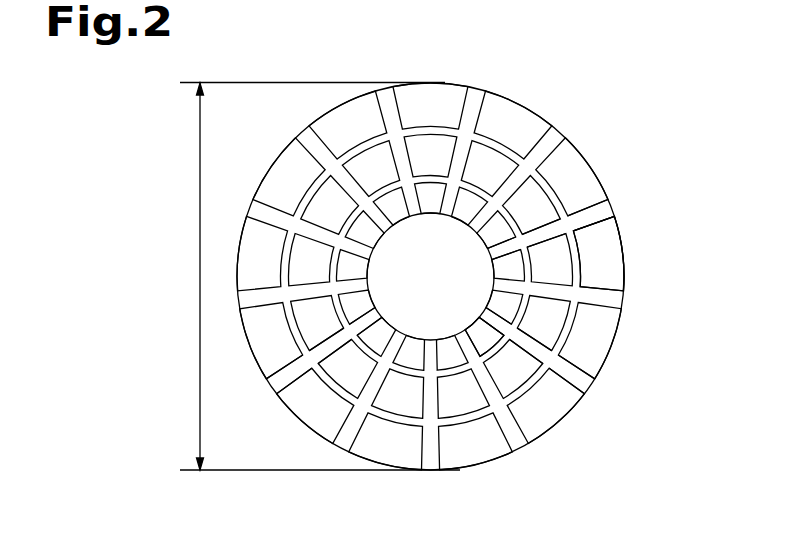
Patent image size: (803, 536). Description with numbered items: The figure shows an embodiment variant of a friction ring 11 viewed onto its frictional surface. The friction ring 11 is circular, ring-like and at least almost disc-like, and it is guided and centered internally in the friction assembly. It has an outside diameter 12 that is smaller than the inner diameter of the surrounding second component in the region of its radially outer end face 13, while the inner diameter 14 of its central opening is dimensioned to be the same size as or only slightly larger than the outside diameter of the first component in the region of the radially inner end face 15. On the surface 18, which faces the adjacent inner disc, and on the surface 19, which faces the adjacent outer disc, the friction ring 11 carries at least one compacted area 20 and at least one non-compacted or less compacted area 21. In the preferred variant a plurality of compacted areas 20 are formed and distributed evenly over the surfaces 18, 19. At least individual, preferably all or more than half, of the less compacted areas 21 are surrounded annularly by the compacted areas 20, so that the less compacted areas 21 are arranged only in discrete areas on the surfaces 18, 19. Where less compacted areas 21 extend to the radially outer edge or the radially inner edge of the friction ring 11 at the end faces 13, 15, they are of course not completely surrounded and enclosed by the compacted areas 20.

The friction ring 11 is at (472, 262).
The outside diameter 12 is at (195, 220).
The radially outer end face 13 is at (433, 75).
The inner diameter 14 is at (430, 340).
The radially inner end face 15 is at (470, 315).
The surface 18 is at (580, 388).
The surface 19 is at (280, 368).
The compacted area 20 is at (617, 207).
The non-compacted or less compacted area 21 is at (624, 265).